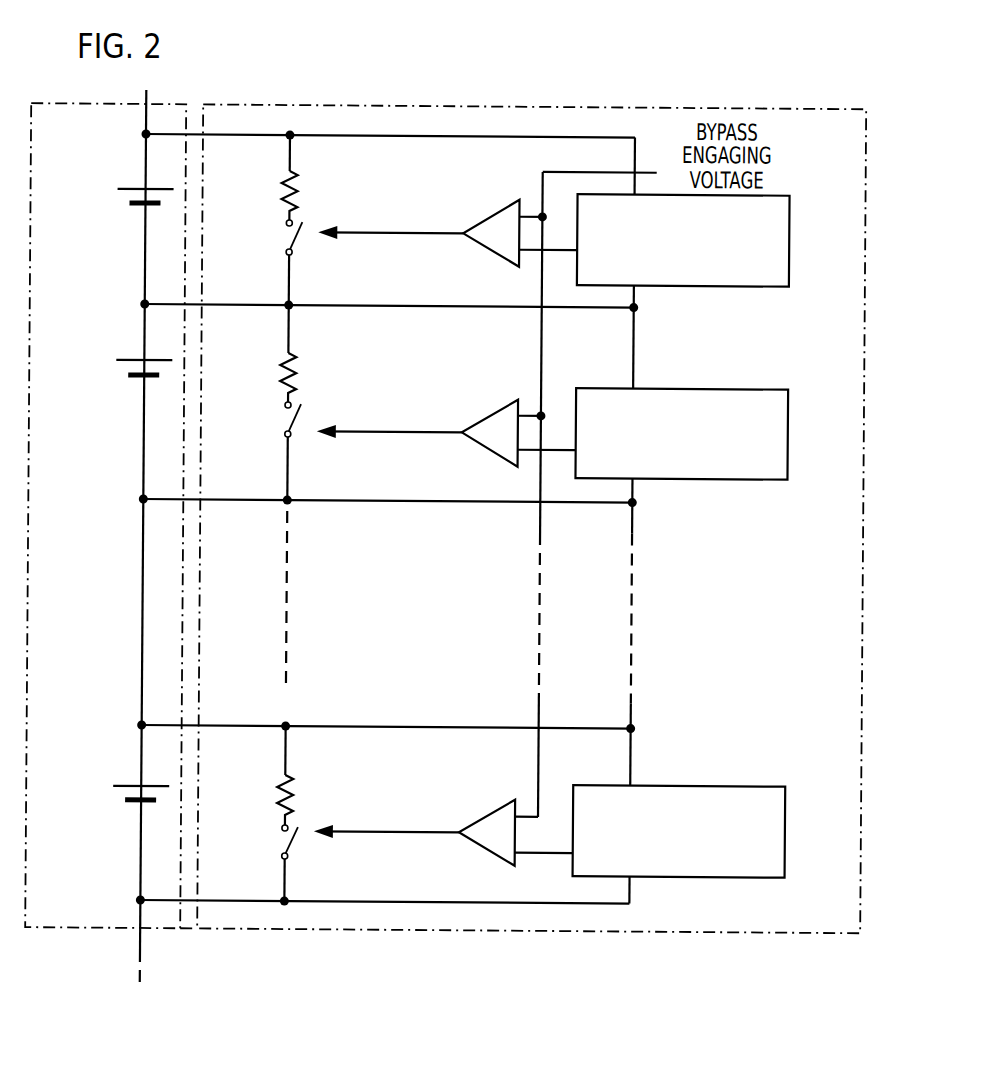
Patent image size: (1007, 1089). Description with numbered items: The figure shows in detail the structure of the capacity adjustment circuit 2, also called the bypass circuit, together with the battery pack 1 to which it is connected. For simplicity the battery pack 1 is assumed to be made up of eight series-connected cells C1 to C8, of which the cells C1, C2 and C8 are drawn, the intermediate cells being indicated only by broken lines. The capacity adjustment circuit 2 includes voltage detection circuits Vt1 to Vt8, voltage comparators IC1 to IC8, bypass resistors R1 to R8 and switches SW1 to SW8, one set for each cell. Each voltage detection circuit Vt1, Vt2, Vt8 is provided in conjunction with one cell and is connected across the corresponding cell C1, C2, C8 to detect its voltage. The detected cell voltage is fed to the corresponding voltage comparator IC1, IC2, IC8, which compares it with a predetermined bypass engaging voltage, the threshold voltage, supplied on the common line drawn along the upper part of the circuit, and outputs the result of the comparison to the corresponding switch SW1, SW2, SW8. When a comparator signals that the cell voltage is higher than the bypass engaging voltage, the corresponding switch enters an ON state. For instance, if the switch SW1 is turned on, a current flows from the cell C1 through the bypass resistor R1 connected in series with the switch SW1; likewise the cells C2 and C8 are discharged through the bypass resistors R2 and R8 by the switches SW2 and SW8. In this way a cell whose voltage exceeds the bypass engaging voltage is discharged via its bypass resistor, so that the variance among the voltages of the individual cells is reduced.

The battery pack 1 is at (86, 927).
The capacity adjustment circuit 2 is at (346, 928).
The cell C1 is at (120, 192).
The cell C2 is at (119, 373).
The cell C8 is at (114, 797).
The bypass resistor R1 is at (265, 177).
The bypass resistor R2 is at (264, 353).
The bypass resistor R8 is at (262, 775).
The switch SW1 is at (267, 263).
The switch SW2 is at (264, 451).
The switch SW8 is at (261, 863).
The voltage comparator IC1 is at (448, 224).
The voltage comparator IC2 is at (447, 426).
The voltage comparator IC8 is at (444, 826).
The voltage detection circuit Vt1 is at (790, 233).
The voltage detection circuit Vt2 is at (790, 428).
The voltage detection circuit Vt8 is at (790, 827).